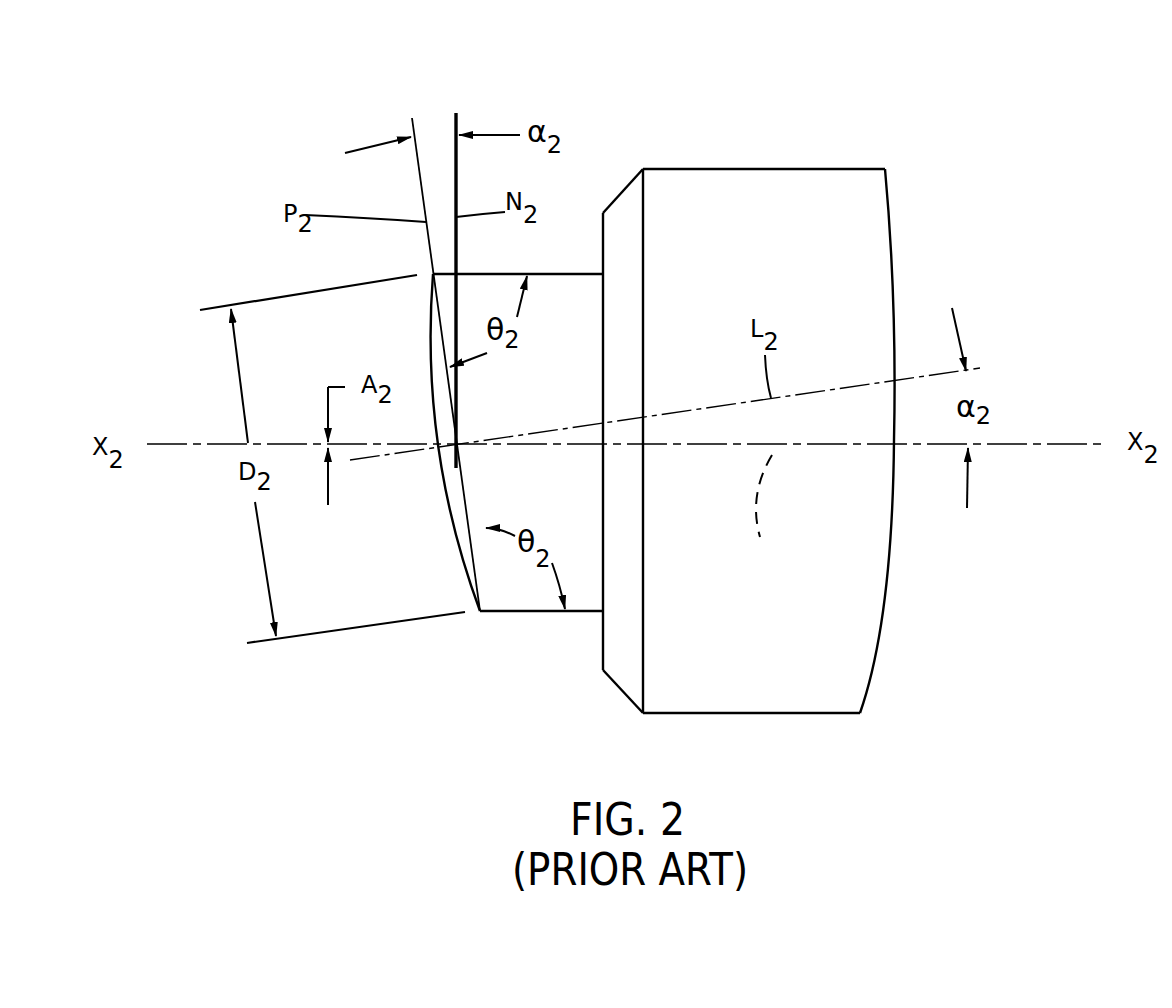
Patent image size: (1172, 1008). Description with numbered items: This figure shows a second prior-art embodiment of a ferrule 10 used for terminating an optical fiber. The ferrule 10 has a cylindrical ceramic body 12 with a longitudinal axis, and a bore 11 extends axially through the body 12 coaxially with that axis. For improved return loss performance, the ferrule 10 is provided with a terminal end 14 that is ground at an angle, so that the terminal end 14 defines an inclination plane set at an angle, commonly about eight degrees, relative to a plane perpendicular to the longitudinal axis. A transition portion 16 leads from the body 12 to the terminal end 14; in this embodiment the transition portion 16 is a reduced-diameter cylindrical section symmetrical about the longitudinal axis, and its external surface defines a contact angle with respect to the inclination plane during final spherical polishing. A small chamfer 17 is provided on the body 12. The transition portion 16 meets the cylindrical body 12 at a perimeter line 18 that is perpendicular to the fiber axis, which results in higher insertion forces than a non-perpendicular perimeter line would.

The ferrule 10 is at (790, 164).
The bore 11 is at (775, 518).
The cylindrical ceramic body 12 is at (805, 640).
The terminal end 14 is at (455, 530).
The transition portion 16 is at (510, 612).
The small chamfer 17 is at (622, 690).
The perimeter line 18 is at (643, 253).